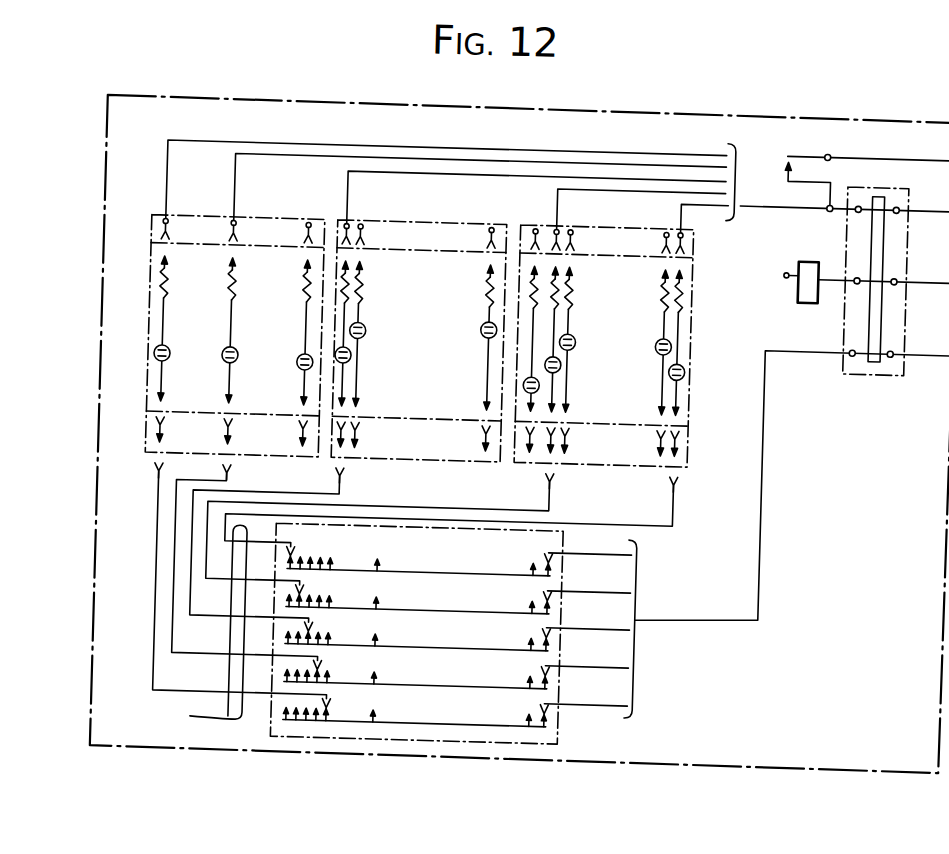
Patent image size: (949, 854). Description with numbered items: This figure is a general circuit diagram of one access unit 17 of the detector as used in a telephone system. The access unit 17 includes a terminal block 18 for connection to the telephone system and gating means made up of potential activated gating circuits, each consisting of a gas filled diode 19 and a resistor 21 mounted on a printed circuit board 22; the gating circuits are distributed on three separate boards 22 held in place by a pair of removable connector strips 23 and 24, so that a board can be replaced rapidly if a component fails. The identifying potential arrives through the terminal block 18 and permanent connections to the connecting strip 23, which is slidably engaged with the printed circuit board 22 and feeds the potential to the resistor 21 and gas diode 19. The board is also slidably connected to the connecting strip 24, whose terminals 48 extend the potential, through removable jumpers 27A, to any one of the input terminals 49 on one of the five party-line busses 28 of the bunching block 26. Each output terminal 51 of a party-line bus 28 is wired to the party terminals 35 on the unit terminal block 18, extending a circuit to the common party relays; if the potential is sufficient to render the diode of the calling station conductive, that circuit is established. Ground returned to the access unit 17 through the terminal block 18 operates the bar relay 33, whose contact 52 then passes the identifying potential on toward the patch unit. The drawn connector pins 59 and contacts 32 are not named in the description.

The access unit 17 is at (411, 107).
The terminal block 18 is at (891, 178).
The gas filled diode 19 is at (168, 363).
The resistor 21 is at (164, 294).
The printed circuit board 22 is at (146, 327).
The connector strip 23 is at (144, 225).
The connector strip 24 is at (146, 462).
The bunching block 26 is at (567, 749).
The removable jumpers 27A is at (176, 634).
The party-line bus 28 is at (437, 548).
The contact 32 is at (850, 202).
The bar relay 33 is at (794, 256).
The party terminals 35 is at (849, 346).
The terminals 48 is at (167, 452).
The input terminals 49 is at (289, 567).
The output terminal 51 is at (549, 571).
The contact 52 is at (780, 149).
The connector pin 59 is at (164, 249).